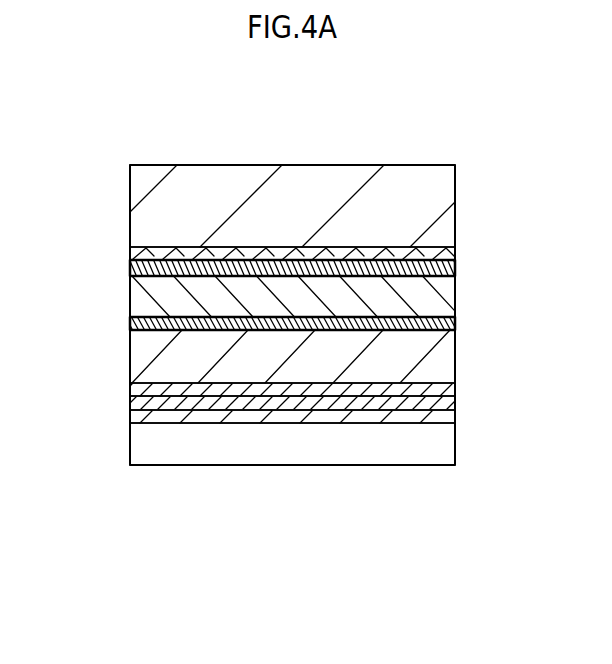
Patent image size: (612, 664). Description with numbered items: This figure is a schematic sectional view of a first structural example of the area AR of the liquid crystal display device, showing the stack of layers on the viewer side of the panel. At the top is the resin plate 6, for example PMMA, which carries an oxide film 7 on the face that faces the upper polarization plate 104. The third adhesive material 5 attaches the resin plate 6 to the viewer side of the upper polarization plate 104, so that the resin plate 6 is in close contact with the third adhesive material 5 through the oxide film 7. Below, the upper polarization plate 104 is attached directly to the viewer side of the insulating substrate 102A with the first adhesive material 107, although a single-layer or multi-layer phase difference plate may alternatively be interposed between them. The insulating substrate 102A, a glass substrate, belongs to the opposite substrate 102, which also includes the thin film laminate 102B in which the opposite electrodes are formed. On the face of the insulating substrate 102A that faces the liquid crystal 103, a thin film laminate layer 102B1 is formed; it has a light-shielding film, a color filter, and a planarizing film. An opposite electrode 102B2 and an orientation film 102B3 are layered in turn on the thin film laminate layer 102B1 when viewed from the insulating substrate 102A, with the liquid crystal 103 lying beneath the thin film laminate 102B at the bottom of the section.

The area AR is at (403, 164).
The resin plate 6 is at (302, 210).
The oxide film 7 is at (181, 256).
The third adhesive material 5 is at (455, 266).
The upper polarization plate 104 is at (172, 296).
The first adhesive material 107 is at (455, 322).
The opposite substrate 102 is at (308, 465).
The insulating substrate 102A is at (405, 359).
The thin film laminate 102B is at (290, 491).
The thin film laminate layer 102B1 is at (189, 388).
The opposite electrode 102B2 is at (272, 404).
The orientation film 102B3 is at (125, 555).
The liquid crystal 103 is at (405, 445).